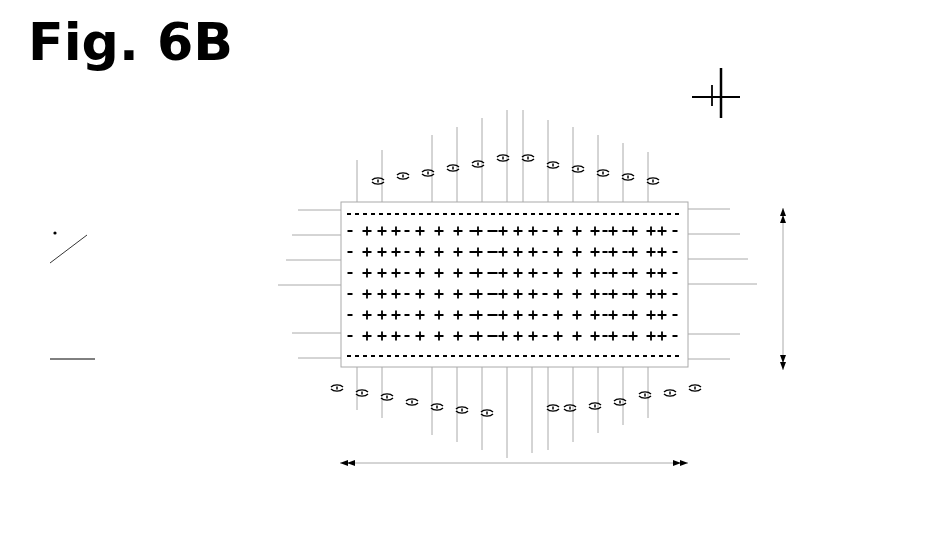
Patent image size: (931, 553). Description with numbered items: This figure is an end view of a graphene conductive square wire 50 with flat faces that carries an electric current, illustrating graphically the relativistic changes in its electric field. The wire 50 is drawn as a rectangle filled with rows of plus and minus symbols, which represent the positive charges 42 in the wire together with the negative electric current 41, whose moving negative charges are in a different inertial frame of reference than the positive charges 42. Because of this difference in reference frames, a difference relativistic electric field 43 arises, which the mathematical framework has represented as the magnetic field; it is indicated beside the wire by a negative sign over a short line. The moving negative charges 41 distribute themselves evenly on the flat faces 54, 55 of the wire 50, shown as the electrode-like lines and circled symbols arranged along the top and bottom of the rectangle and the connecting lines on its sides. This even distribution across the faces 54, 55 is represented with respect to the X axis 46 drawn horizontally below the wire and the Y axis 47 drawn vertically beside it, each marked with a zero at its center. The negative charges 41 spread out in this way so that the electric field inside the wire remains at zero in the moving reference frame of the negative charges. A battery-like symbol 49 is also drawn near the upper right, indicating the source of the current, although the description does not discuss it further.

The negative electric current 41 is at (60, 220).
The positive charges 42 is at (140, 260).
The difference relativistic electric field 43 is at (74, 362).
The X axis 46 is at (516, 503).
The Y axis 47 is at (798, 264).
The voltage source 49 is at (748, 106).
The graphene conductive square wire 50 is at (690, 196).
The flat face 54 is at (580, 196).
The flat face 55 is at (333, 283).